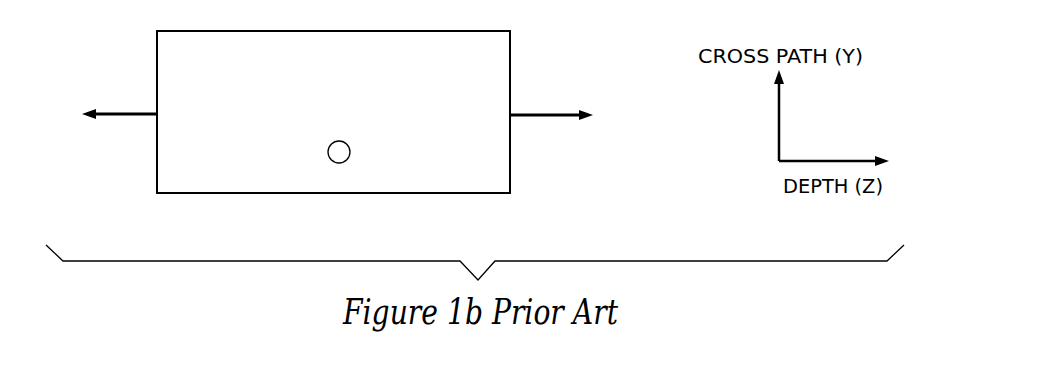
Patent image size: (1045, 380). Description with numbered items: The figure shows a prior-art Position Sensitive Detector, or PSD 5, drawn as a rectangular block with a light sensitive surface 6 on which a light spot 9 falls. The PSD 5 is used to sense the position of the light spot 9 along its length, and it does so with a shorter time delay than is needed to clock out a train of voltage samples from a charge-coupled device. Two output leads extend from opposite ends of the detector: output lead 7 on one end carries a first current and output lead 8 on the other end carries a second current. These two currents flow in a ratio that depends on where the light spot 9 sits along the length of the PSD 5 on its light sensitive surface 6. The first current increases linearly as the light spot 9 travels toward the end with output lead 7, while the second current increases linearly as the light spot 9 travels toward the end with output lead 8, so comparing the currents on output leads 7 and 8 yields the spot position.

The position sensitive detector 5 is at (512, 48).
The light sensitive surface 6 is at (205, 178).
The output lead 7 is at (120, 111).
The output lead 8 is at (545, 120).
The light spot 9 is at (350, 150).